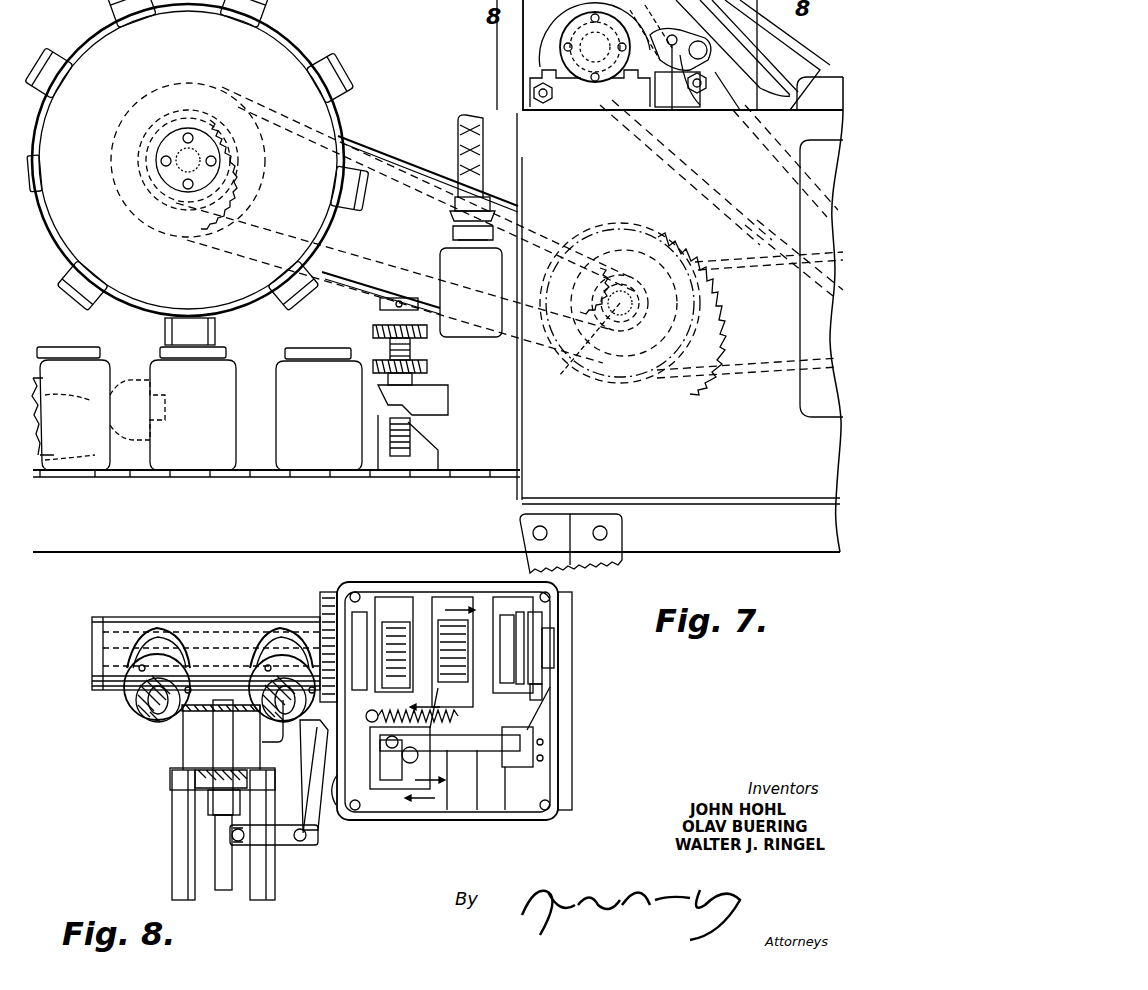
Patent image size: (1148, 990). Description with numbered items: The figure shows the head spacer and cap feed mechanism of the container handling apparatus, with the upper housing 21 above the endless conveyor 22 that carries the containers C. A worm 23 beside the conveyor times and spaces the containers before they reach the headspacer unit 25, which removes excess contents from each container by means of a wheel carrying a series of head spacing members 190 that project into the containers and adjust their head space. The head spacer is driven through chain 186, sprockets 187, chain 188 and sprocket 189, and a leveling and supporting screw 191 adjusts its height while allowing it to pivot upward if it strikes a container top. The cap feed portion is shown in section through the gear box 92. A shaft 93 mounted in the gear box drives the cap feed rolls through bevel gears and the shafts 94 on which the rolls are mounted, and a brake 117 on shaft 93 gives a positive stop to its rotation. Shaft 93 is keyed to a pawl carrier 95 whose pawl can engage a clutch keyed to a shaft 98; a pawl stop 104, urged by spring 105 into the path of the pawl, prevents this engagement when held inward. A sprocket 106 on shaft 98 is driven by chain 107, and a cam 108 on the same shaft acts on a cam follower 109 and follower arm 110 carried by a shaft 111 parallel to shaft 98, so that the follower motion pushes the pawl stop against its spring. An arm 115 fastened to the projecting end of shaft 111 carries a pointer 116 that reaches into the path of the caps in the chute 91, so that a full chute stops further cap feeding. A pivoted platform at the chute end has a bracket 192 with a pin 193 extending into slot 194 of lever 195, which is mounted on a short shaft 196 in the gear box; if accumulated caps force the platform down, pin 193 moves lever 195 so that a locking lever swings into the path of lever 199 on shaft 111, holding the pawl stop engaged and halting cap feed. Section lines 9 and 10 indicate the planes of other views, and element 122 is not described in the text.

In FIG. 7, the headspacer unit 25 is at (322, 25).
In FIG. 7, the head spacing members 190 is at (352, 66).
In FIG. 7, the sprocket 189 is at (232, 186).
In FIG. 7, the chain 188 is at (600, 232).
In FIG. 7, the upper housing 21 is at (523, 116).
In FIG. 7, the leveling and supporting screw 191 is at (412, 354).
In FIG. 7, the containers C is at (288, 392).
In FIG. 7, the worm 23 is at (130, 380).
In FIG. 7, the endless conveyor 22 is at (243, 468).
In FIG. 7, the gear box 92 is at (528, 22).
In FIG. 8, the gear box 92 is at (483, 822).
In FIG. 7, the shaft 93 is at (560, 52).
In FIG. 8, the shaft 93 is at (92, 668).
In FIG. 8, the shafts 94 is at (148, 714).
In FIG. 7, the chute 91 is at (790, 78).
In FIG. 8, the chute 91 is at (240, 890).
In FIG. 7, the pointer 116 is at (777, 66).
In FIG. 8, the pointer 116 is at (245, 840).
In FIG. 7, the bracket 192 is at (707, 57).
In FIG. 7, the short shaft 196 is at (707, 90).
In FIG. 7, the slot 194 is at (646, 32).
In FIG. 7, the pin 193 is at (672, 105).
In FIG. 8, the pin 193 is at (260, 733).
In FIG. 7, the lever 195 is at (695, 108).
In FIG. 8, the lever 195 is at (308, 770).
In FIG. 7, the arm 122 is at (765, 100).
In FIG. 7, the chain 107 is at (700, 192).
In FIG. 8, the chain 107 is at (507, 614).
In FIG. 7, the sprocket 187 is at (700, 312).
In FIG. 7, the chain 186 is at (745, 366).
In FIG. 8, the brake 117 is at (388, 620).
In FIG. 8, the pawl carrier 95 is at (442, 620).
In FIG. 8, the section line 10- 10 is at (445, 686).
In FIG. 8, the section line 9- 9 is at (422, 750).
In FIG. 8, the sprocket 106 is at (522, 612).
In FIG. 8, the cam 108 is at (540, 620).
In FIG. 8, the shaft 98 is at (553, 648).
In FIG. 8, the cam follower 109 is at (543, 692).
In FIG. 8, the follower arm 110 is at (546, 715).
In FIG. 8, the spring 105 is at (460, 714).
In FIG. 8, the pawl stop 104 is at (462, 735).
In FIG. 8, the shaft 111 is at (492, 752).
In FIG. 8, the lever 199 is at (395, 790).
In FIG. 8, the arm 115 is at (325, 805).